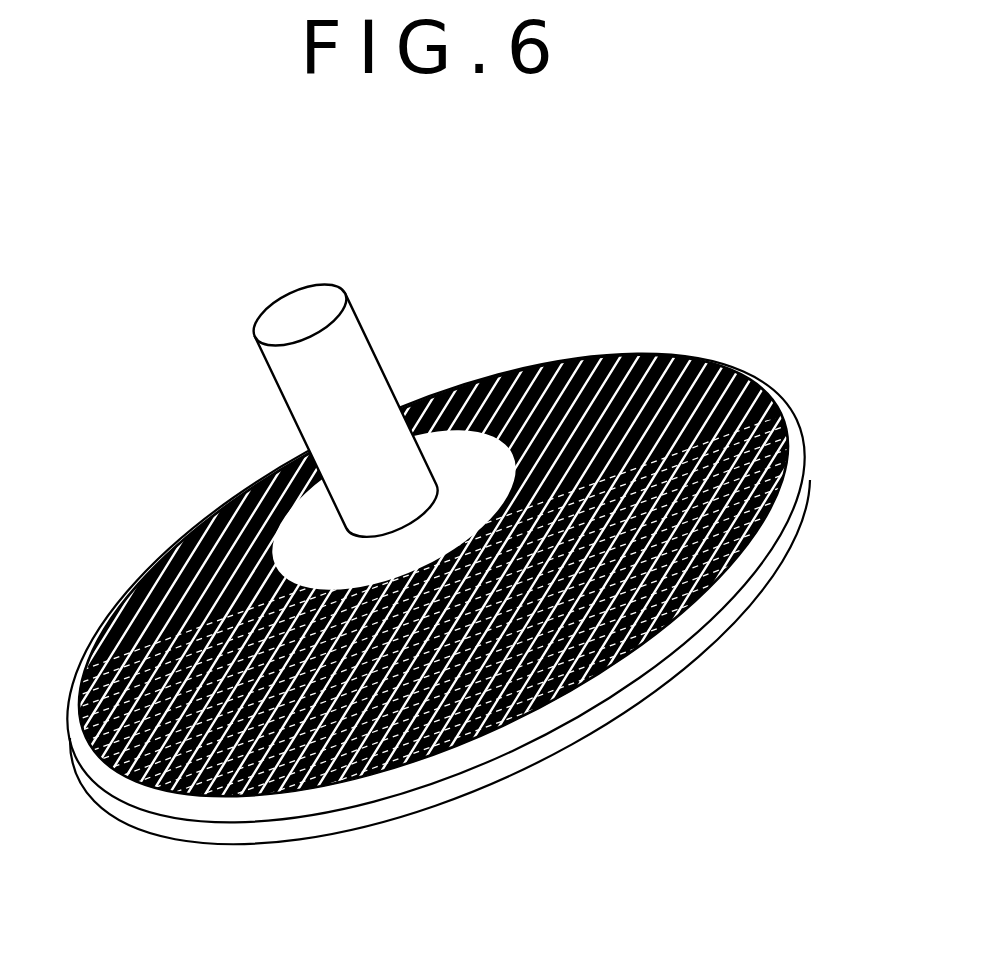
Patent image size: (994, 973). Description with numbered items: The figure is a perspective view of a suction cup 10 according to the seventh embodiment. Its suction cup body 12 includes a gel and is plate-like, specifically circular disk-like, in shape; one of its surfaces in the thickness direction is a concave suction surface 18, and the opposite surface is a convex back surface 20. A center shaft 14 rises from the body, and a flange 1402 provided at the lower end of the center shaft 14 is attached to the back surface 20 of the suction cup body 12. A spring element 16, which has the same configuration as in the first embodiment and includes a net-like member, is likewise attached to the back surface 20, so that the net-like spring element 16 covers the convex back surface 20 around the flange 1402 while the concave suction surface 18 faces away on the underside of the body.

The suction cup 10 is at (497, 571).
The suction cup body 12 is at (713, 365).
The center shaft 14 is at (310, 383).
The flange 1402 is at (460, 453).
The spring element 16 is at (757, 417).
The suction surface 18 is at (640, 707).
The back surface 20 is at (142, 557).